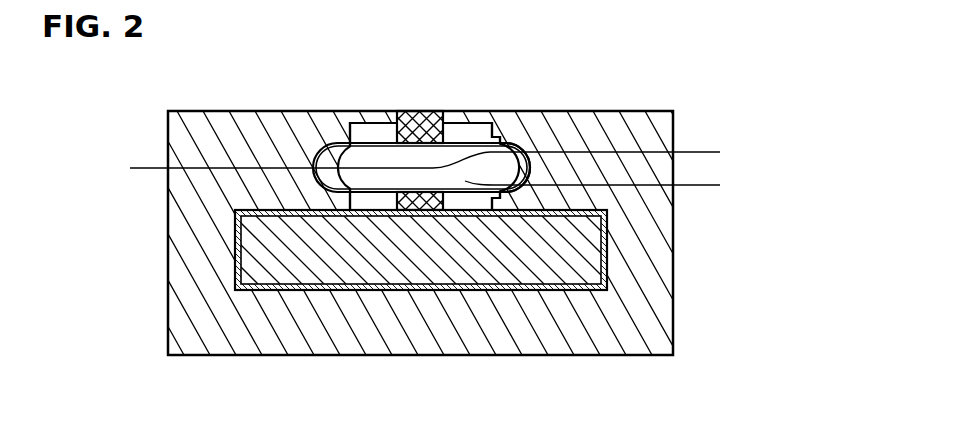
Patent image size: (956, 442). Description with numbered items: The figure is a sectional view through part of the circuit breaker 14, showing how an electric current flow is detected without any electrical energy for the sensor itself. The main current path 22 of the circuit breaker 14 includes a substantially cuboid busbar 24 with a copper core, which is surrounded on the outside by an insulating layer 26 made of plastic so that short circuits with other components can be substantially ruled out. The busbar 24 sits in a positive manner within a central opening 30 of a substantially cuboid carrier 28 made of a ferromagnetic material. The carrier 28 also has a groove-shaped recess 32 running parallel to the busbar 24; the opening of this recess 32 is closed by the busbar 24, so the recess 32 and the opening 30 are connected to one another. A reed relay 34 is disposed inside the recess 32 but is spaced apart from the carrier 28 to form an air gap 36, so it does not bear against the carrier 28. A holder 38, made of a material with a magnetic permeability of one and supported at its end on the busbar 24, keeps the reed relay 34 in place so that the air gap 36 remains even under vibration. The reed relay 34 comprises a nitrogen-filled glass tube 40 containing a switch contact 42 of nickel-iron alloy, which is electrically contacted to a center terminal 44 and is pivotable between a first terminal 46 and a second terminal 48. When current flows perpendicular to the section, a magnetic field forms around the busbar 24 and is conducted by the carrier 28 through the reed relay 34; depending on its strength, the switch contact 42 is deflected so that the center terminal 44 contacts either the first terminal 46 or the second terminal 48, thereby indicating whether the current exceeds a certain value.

The circuit breaker 14 is at (735, 110).
The main current path 22 is at (585, 242).
The busbar 24 is at (257, 253).
The insulating layer 26 is at (322, 288).
The carrier 28 is at (652, 308).
The central opening 30 is at (388, 288).
The groove-shaped recess 32 is at (370, 133).
The reed relay 34 is at (462, 143).
The air gap 36 is at (316, 152).
The holder 38 is at (420, 130).
The glass tube 40 is at (333, 176).
The switch contact 42 is at (460, 160).
The center terminal 44 is at (242, 170).
The first terminal 46 is at (502, 143).
The second terminal 48 is at (502, 178).